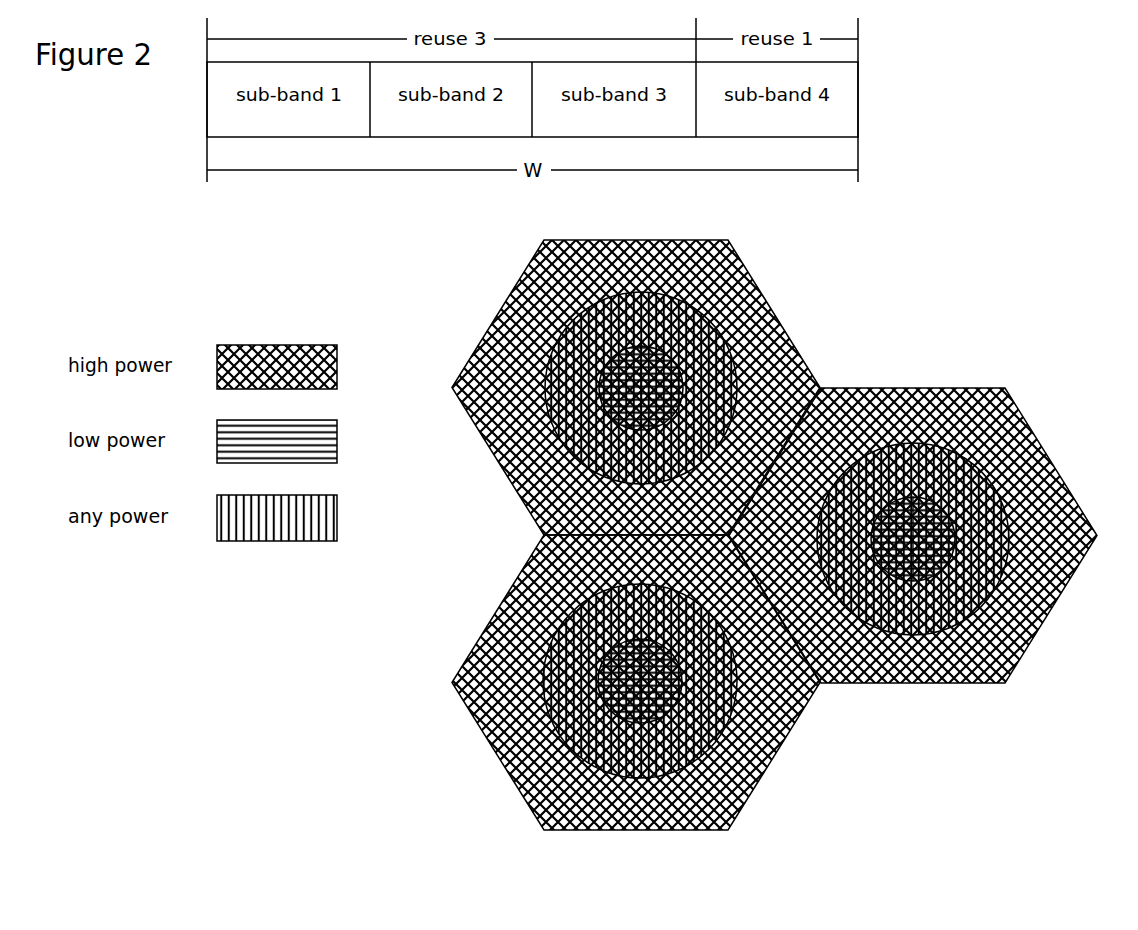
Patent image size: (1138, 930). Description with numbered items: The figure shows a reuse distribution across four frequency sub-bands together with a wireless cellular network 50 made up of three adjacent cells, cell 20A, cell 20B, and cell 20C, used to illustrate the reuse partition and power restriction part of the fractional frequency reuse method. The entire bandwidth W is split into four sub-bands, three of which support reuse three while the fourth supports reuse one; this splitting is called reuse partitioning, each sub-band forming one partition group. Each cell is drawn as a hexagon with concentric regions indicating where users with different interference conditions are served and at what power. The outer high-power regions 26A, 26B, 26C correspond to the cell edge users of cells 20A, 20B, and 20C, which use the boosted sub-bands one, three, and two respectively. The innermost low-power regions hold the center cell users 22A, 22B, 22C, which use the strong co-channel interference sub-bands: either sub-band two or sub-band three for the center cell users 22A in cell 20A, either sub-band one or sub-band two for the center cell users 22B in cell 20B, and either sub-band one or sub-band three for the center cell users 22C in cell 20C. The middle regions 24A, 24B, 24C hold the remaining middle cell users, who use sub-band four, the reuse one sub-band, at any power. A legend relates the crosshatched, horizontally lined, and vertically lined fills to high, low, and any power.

The wireless cellular network 50 is at (882, 312).
The cell 20A is at (642, 387).
The cell 20B is at (916, 534).
The cell 20C is at (619, 682).
The center cell users 22A is at (681, 363).
The center cell users 22B is at (943, 508).
The center cell users 22C is at (677, 648).
The middle region of cell A (any power) 24A is at (641, 388).
The middle region of cell B (any power) 24B is at (913, 539).
The middle region of cell C (any power) 24C is at (640, 681).
The outer region of cell A (high power) 26A is at (636, 387).
The outer region of cell B (high power) 26B is at (913, 535).
The outer region of cell C (high power) 26C is at (636, 682).